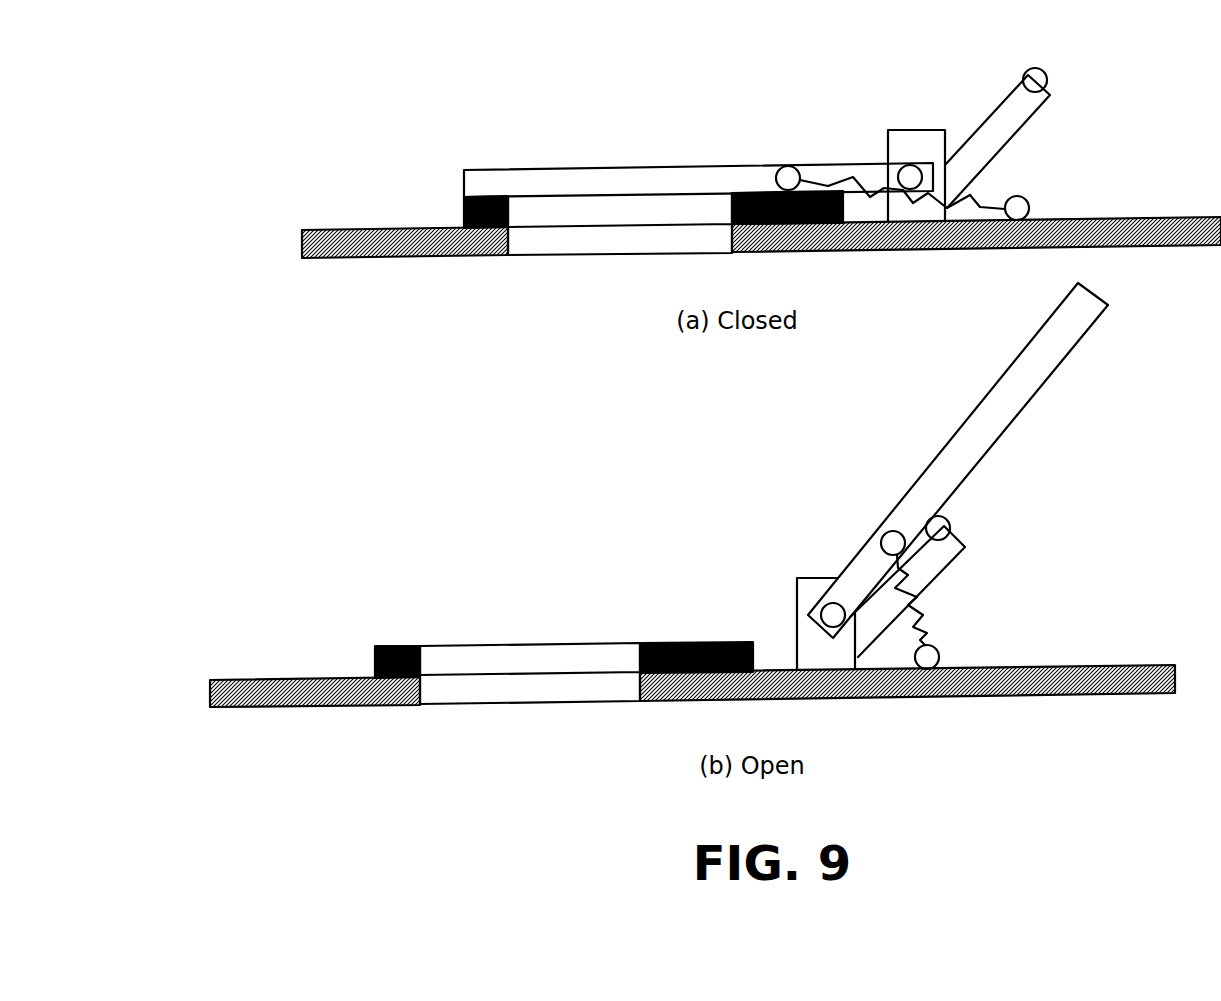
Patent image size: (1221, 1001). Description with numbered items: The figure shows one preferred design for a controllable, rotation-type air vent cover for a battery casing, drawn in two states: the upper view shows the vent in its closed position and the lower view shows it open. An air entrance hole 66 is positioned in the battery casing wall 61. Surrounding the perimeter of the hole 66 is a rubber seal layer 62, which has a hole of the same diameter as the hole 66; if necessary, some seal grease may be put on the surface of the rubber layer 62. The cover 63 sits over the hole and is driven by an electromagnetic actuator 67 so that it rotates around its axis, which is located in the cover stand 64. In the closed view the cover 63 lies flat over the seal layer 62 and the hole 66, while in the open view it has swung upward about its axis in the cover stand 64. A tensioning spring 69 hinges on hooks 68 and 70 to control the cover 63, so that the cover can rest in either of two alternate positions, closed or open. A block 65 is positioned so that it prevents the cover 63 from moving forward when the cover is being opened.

The battery casing wall 61 is at (318, 245).
The rubber seal layer 62 is at (463, 210).
The cover 63 is at (575, 172).
The cover stand 64 is at (890, 130).
The block 65 is at (1048, 78).
The air entrance hole 66 is at (495, 693).
The electromagnetic actuator 67 is at (805, 598).
The hook 68 is at (892, 540).
The tensioning spring 69 is at (922, 600).
The hook 70 is at (940, 651).